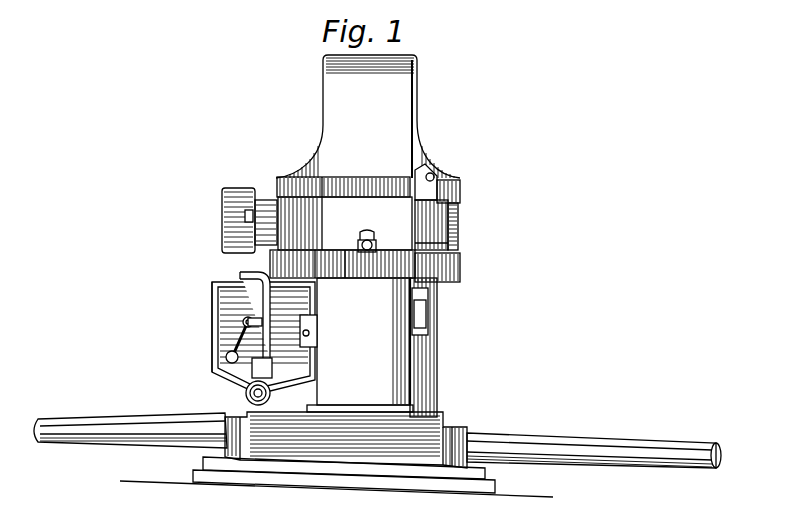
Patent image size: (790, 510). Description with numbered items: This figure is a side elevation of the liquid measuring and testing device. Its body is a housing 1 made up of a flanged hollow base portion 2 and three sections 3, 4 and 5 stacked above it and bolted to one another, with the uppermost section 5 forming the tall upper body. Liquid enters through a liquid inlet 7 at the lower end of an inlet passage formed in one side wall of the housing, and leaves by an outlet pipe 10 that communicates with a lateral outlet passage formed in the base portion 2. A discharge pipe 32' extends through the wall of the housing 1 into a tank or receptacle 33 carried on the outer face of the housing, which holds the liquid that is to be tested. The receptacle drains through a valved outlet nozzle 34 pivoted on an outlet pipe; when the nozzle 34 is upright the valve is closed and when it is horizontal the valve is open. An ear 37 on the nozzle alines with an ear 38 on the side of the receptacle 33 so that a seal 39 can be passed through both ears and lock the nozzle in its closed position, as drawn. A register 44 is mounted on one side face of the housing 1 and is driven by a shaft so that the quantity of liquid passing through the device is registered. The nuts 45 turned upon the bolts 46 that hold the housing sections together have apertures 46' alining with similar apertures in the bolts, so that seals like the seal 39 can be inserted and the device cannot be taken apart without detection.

The housing 1 is at (430, 107).
The flanged hollow base portion 2 is at (448, 481).
The section 3 is at (440, 363).
The section 4 is at (460, 228).
The section 5 is at (403, 122).
The liquid inlet 7 is at (560, 446).
The outlet pipe 10 is at (118, 428).
The discharge pipe 32' is at (235, 331).
The tank or receptacle 33 is at (213, 290).
The valved outlet nozzle 34 is at (240, 290).
The ear 37 is at (243, 322).
The ear 38 is at (230, 338).
The seal 39 is at (225, 358).
The register 44 is at (238, 200).
The nuts 45 is at (430, 165).
The bolts 46 is at (435, 208).
The apertures 46' is at (351, 212).